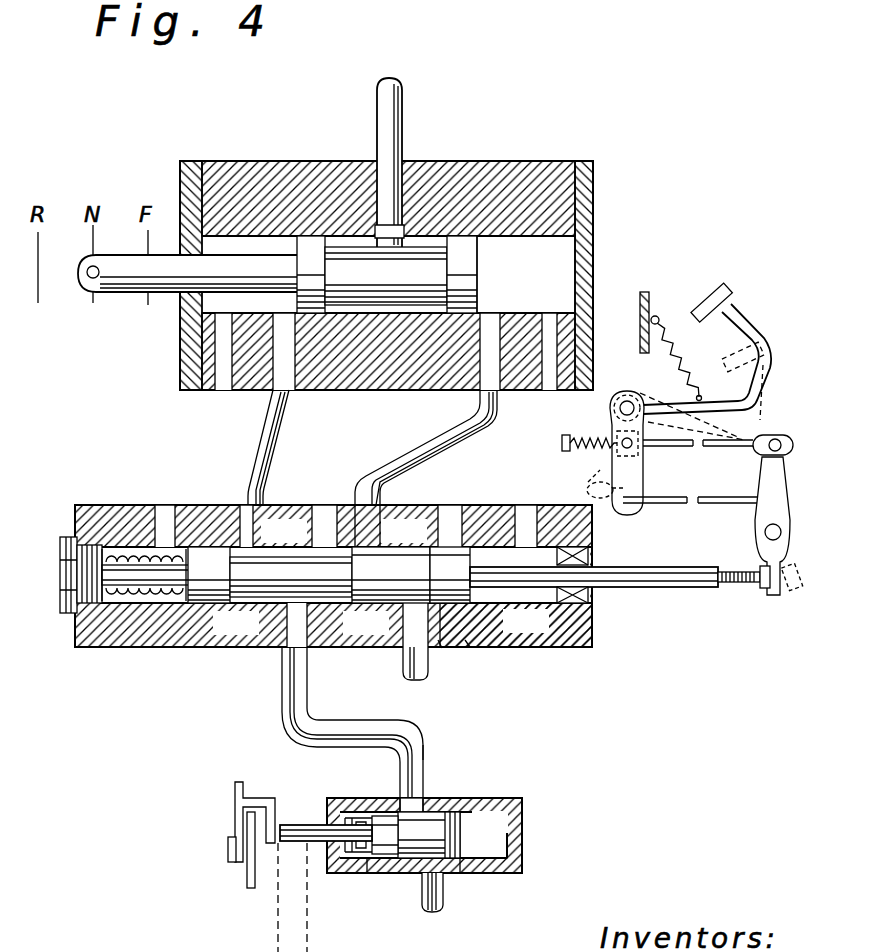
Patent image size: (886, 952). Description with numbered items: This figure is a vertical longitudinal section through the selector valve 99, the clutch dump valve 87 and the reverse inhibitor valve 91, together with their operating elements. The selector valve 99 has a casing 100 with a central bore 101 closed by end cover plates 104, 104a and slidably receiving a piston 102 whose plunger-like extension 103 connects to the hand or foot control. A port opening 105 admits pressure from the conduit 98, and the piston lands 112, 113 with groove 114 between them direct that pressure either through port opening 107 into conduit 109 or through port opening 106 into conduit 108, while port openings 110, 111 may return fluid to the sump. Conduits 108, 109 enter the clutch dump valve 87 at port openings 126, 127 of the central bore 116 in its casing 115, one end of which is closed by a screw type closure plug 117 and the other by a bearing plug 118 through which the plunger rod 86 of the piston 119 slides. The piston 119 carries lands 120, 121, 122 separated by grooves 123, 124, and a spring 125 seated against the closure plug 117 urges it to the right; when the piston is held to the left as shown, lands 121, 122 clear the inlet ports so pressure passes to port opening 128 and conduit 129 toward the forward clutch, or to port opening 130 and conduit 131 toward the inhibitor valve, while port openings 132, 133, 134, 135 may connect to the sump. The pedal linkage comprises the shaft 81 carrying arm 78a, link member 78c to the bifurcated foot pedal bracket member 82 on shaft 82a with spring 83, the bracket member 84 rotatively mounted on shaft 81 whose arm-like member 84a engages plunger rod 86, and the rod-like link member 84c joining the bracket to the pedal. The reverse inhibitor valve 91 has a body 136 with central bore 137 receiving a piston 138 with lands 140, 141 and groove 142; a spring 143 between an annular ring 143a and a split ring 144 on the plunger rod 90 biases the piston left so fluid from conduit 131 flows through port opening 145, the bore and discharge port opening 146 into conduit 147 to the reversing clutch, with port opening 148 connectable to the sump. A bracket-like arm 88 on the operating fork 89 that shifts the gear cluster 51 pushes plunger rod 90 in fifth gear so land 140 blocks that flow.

The selector valve 99 is at (244, 134).
The casing or housing 100 is at (292, 161).
The end cover plate 104 is at (186, 166).
The end cover plate 104a is at (594, 200).
The conduit 98 is at (402, 112).
The port opening 105 is at (400, 166).
The plunger-like extension 103 is at (128, 294).
The central bore 101 is at (245, 241).
The land 113 is at (298, 248).
The groove 114 is at (420, 248).
The land 112 is at (470, 256).
The piston 102 is at (470, 290).
The port opening 110 is at (218, 390).
The port opening 107 is at (290, 398).
The port opening 106 is at (498, 400).
The port opening 111 is at (548, 395).
The conduit 109 is at (252, 435).
The conduit 108 is at (423, 440).
The clutch dump valve 87 is at (603, 645).
The central bore 116 is at (548, 605).
The port opening 135 is at (165, 508).
The port opening 127 is at (253, 504).
The port opening 134 is at (327, 510).
The port opening 126 is at (381, 504).
The port opening 133 is at (458, 510).
The port opening 132 is at (522, 510).
The port opening 130 is at (285, 650).
The port opening 128 is at (403, 655).
The screw type closure plug 117 is at (67, 537).
The casing or housing 115 is at (86, 544).
The spring 125 is at (118, 549).
The groove 124 is at (270, 601).
The land 122 is at (308, 550).
The groove 123 is at (395, 601).
The land 121 is at (405, 540).
The plunger rod 86 is at (610, 590).
The bearing plug 118 is at (590, 551).
The piston 119 is at (440, 648).
The land 120 is at (468, 645).
The conduit 129 is at (404, 678).
The conduit 131 is at (281, 695).
The port opening 145 is at (425, 756).
The casing or body 136 is at (475, 798).
The central bore 137 is at (507, 812).
The piston 138 is at (473, 822).
The groove 142 is at (416, 796).
The land 141 is at (440, 815).
The split ring 144 is at (345, 812).
The spring 143 is at (355, 814).
The annular ring 143a is at (367, 816).
The plunger rod 90 is at (300, 825).
The discharge port opening 146 is at (440, 890).
The conduit 147 is at (425, 898).
The port opening 148 is at (466, 874).
The land 140 is at (372, 864).
The reverse inhibitor valve 91 is at (358, 891).
The bracket-like arm 88 is at (246, 800).
The gear speed-ratio operating fork 89 is at (247, 806).
The gear cluster 51 is at (224, 837).
The spring 83 is at (680, 372).
The bifurcated foot pedal bracket member 82 is at (730, 306).
The shaft 82a is at (627, 400).
The rod-like link member 84c is at (700, 503).
The link member 78c is at (748, 438).
The bracket member 84 is at (760, 530).
The arm 78a is at (760, 471).
The shaft 81 is at (765, 548).
The rigid arm-like member 84a is at (772, 596).